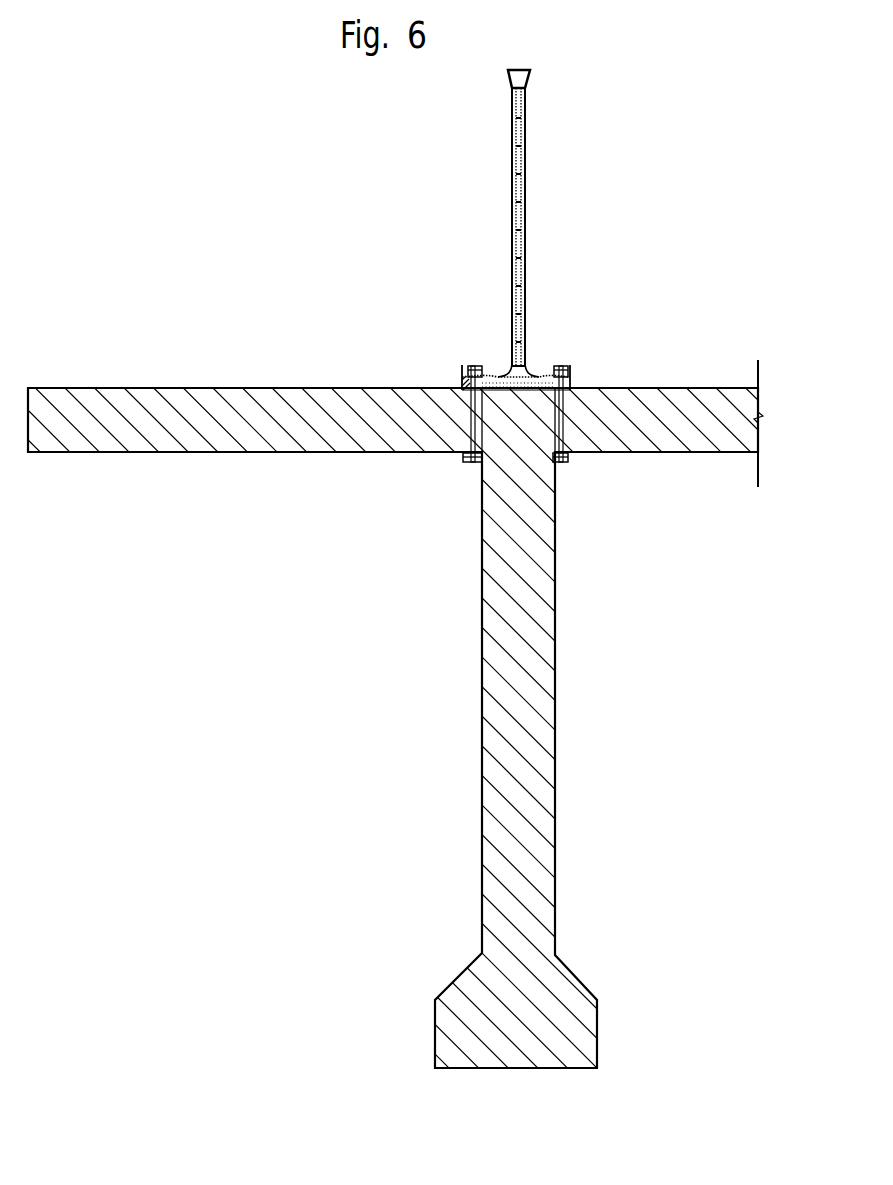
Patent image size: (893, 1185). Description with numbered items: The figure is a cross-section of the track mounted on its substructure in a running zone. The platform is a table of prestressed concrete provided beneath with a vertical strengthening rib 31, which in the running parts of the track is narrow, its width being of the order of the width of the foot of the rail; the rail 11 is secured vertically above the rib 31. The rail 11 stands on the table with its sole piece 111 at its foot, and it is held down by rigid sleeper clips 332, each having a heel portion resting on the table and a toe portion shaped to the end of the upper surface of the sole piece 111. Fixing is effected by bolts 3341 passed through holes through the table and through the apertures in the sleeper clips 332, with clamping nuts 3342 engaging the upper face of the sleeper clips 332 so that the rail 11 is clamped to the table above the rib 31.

The post 11 is at (511, 182).
The sole piece 111 is at (502, 376).
The vertical strengthening rib 31 is at (537, 695).
The rigid sleeper clip 332 is at (569, 378).
The bolt 3341 is at (566, 415).
The clamping nut 3342 is at (561, 366).